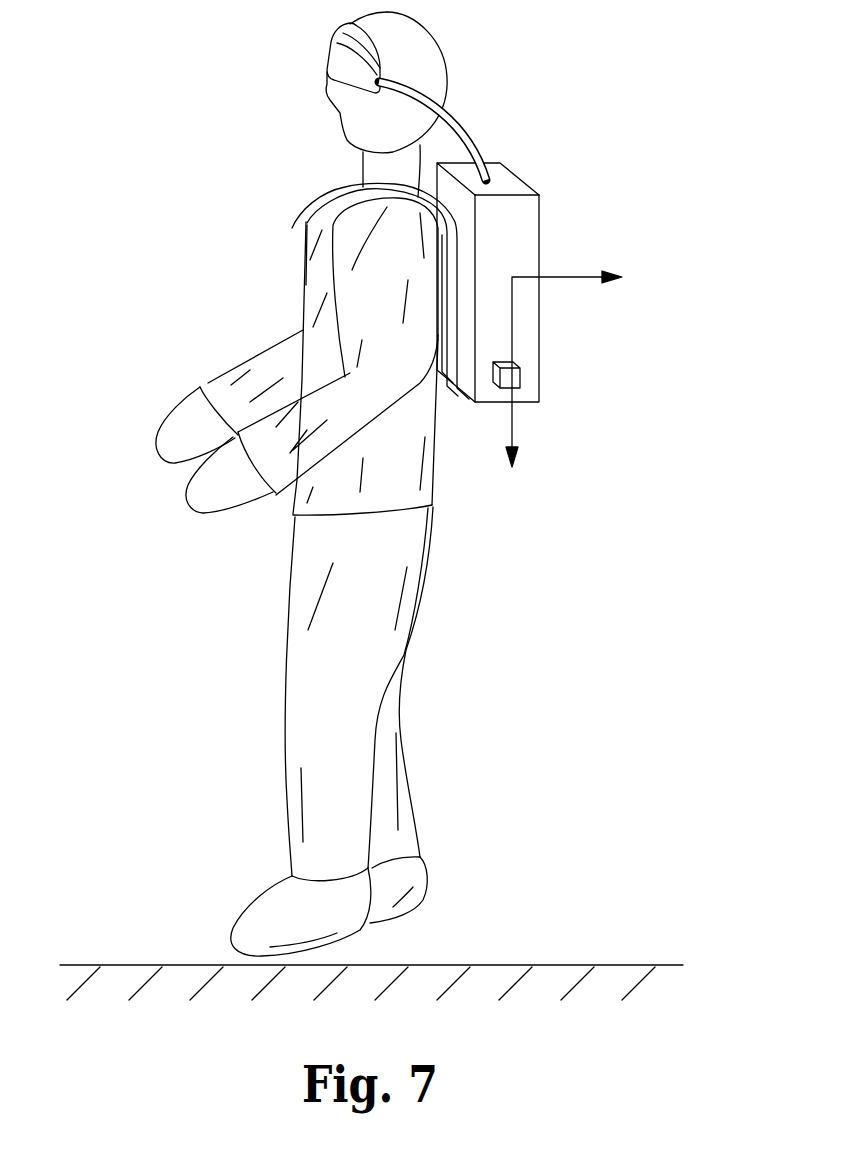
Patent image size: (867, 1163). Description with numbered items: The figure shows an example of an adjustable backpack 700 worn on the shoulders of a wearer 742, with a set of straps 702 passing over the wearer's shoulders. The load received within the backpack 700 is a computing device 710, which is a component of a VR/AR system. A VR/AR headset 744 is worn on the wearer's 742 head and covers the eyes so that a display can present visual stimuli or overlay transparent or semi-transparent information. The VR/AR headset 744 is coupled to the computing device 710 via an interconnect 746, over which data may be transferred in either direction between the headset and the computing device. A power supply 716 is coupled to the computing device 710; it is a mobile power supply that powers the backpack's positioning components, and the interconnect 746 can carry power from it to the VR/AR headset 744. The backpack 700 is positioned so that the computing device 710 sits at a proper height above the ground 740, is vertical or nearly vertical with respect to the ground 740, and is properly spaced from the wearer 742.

The backpack 700 is at (437, 261).
The shoulder straps 702 is at (290, 228).
The computing device 710 is at (540, 236).
The power supply 716 is at (520, 373).
The ground 740 is at (577, 963).
The wearer 742 is at (305, 303).
The VR/AR headset 744 is at (332, 32).
The interconnect 746 is at (467, 122).